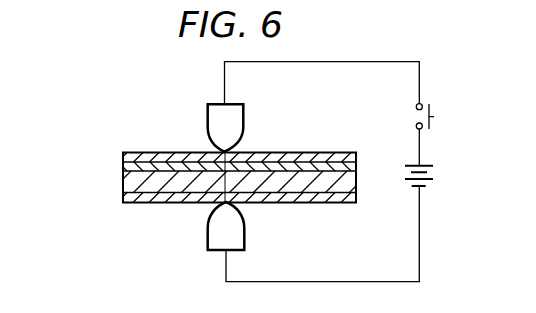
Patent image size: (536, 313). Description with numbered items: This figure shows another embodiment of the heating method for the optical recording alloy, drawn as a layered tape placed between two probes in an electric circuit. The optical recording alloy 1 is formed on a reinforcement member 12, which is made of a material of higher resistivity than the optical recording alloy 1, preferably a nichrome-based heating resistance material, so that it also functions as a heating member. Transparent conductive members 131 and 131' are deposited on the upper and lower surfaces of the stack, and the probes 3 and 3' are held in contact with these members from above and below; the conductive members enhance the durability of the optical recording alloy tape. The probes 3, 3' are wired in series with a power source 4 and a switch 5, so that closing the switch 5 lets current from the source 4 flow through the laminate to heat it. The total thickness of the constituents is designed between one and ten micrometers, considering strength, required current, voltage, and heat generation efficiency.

The optical recording alloy 1 is at (123, 166).
The reinforcement member 12 is at (123, 179).
The transparent conductive member 131 is at (207, 147).
The transparent conductive member 131' is at (212, 215).
The probe 3 is at (201, 125).
The probe 3' is at (203, 228).
The power source 4 is at (435, 172).
The switch 5 is at (437, 120).